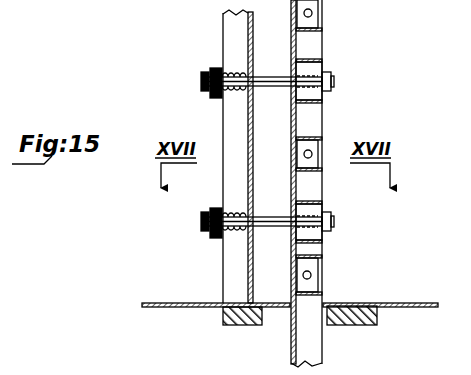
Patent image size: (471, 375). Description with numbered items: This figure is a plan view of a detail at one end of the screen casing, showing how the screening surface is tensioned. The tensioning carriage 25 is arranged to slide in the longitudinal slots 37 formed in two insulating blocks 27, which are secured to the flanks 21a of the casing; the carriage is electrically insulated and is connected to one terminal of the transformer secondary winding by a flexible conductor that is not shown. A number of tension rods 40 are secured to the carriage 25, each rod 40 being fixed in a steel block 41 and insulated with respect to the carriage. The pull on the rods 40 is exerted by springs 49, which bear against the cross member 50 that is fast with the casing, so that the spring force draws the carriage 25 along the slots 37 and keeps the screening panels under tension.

The flanks of the casing 21a is at (153, 309).
The tensioning carriage 25 is at (313, 188).
The insulating blocks 27 is at (373, 325).
The longitudinal slots 37 is at (279, 318).
The tension rods 40 is at (263, 78).
The steel block 41 is at (319, 74).
The springs 49 is at (233, 94).
The cross member 50 is at (233, 263).